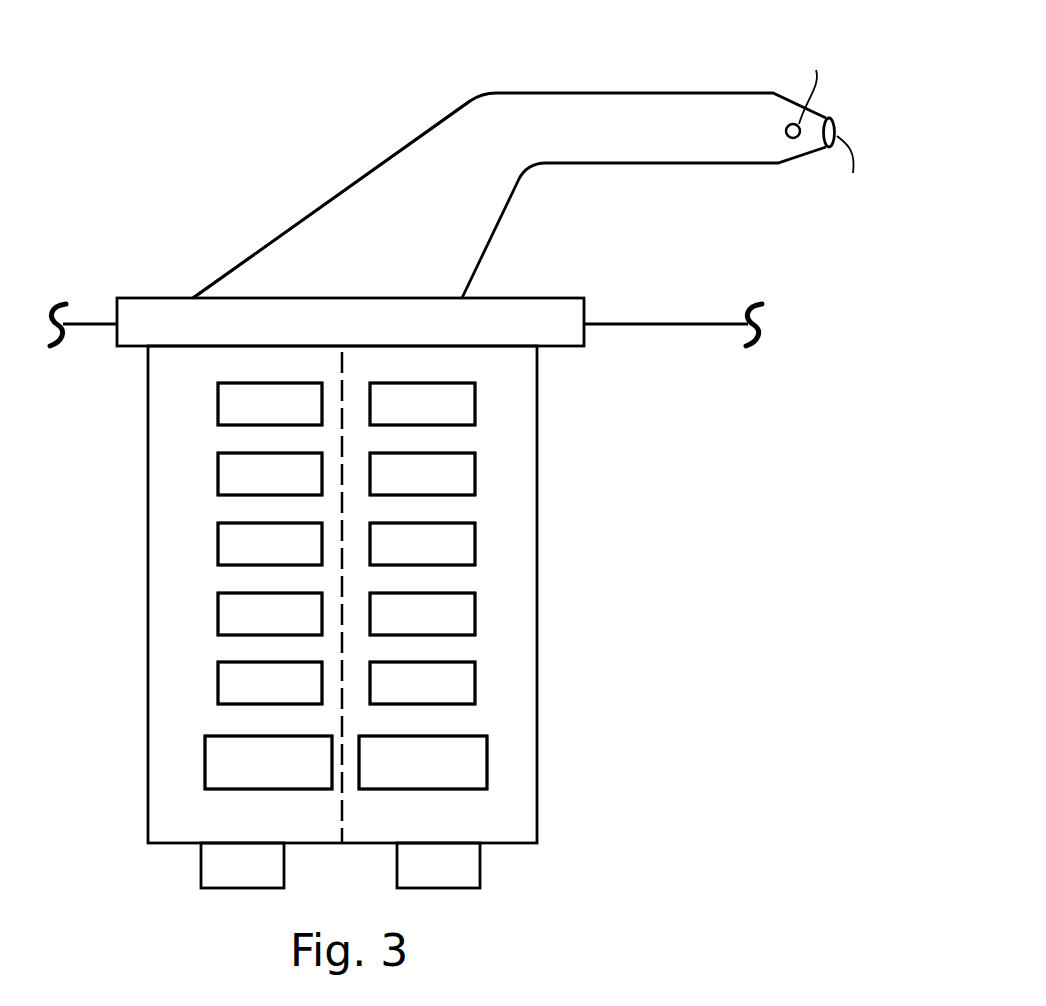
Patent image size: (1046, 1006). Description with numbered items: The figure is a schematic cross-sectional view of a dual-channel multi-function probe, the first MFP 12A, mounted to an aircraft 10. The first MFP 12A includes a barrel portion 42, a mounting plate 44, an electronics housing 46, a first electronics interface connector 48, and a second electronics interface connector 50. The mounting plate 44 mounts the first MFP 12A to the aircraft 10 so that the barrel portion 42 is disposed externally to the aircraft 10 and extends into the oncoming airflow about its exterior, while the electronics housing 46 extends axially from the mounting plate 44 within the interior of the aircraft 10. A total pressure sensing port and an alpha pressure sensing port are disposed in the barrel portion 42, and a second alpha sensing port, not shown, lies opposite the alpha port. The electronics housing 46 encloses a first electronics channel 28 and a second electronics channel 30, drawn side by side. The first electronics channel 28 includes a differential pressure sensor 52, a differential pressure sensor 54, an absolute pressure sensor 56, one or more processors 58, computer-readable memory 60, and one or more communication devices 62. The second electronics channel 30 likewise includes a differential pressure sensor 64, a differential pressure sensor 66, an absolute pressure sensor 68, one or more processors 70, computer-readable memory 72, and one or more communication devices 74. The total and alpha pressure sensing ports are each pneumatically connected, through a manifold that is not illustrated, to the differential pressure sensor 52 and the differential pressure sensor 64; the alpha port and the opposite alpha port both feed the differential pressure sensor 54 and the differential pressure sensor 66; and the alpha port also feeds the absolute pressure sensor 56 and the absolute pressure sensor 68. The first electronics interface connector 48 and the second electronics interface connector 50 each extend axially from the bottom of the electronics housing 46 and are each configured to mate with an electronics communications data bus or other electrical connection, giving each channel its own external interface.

The aircraft 10 is at (644, 318).
The first MFP 12A is at (352, 129).
The first electronics channel 28 is at (528, 441).
The second electronics channel 30 is at (172, 431).
The barrel portion 42 is at (628, 82).
The mounting plate 44 is at (147, 297).
The electronics housing 46 is at (148, 582).
The first electronics interface connector 48 is at (480, 866).
The second electronics interface connector 50 is at (201, 866).
The differential pressure sensor 52 is at (475, 400).
The differential pressure sensor 54 is at (475, 470).
The absolute pressure sensor 56 is at (475, 539).
The processors 58 is at (475, 609).
The computer-readable memory 60 is at (475, 679).
The communication devices 62 is at (487, 762).
The differential pressure sensor 64 is at (218, 400).
The differential pressure sensor 66 is at (218, 470).
The absolute pressure sensor 68 is at (218, 539).
The processors 70 is at (218, 609).
The computer-readable memory 72 is at (218, 679).
The communication devices 74 is at (205, 762).